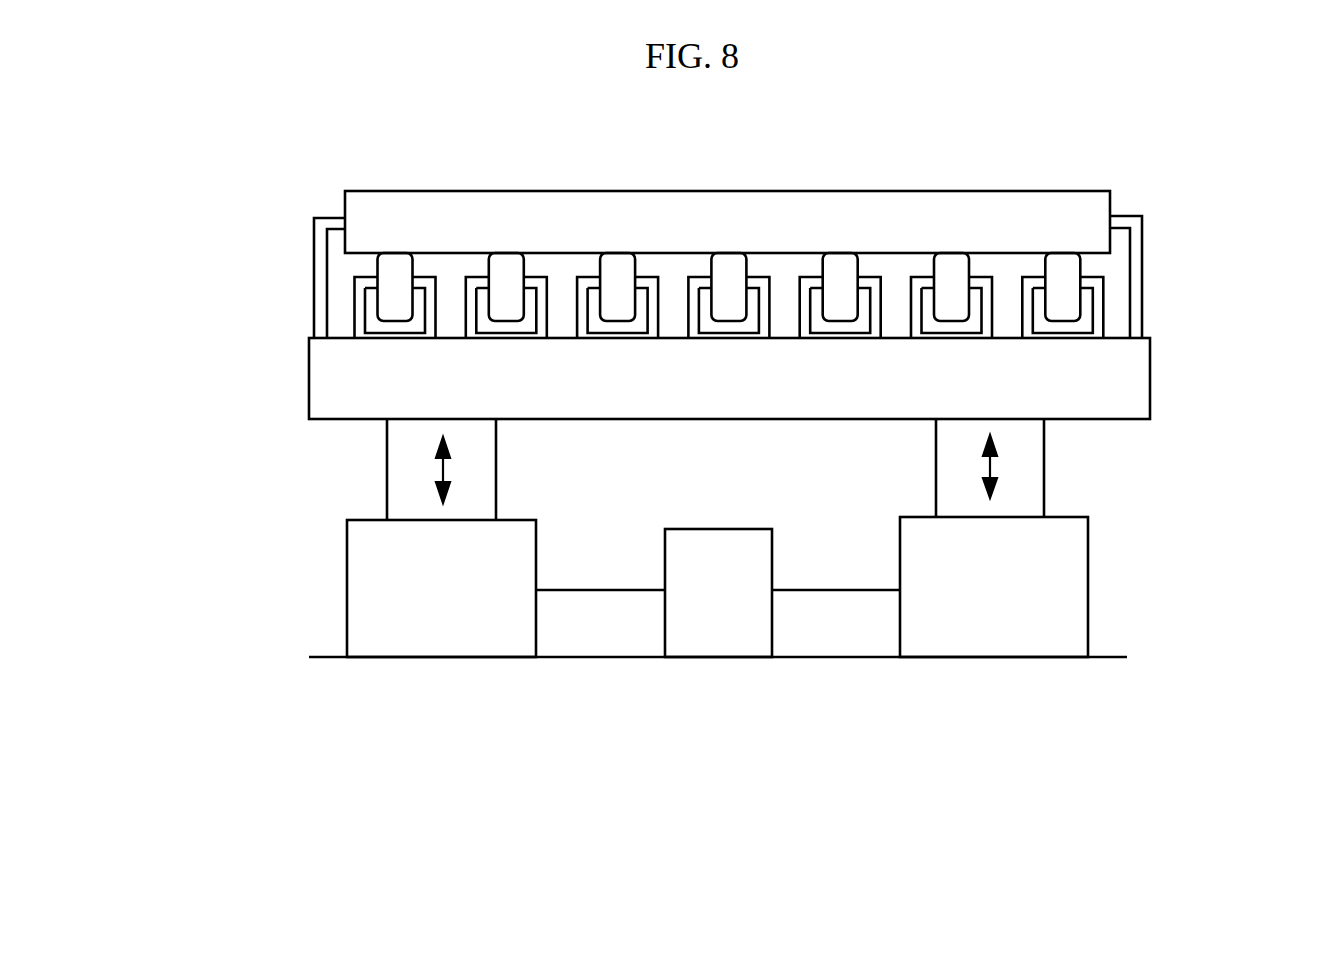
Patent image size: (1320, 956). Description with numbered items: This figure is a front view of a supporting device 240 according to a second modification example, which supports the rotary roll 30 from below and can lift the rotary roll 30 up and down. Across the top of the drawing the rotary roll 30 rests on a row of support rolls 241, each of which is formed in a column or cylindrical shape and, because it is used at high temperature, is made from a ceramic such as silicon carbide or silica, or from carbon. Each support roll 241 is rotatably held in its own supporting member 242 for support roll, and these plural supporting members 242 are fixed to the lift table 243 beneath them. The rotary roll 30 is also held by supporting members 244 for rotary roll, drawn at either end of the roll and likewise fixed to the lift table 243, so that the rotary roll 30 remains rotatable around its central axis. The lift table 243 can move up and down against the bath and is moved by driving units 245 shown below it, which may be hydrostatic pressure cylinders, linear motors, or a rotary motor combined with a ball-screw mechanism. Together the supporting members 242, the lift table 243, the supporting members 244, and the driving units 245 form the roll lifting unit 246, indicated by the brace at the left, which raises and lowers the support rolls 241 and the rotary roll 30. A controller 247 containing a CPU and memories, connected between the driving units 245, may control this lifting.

The rotary roll 30 is at (1078, 200).
The supporting device 240 is at (1172, 417).
The support roll 241 is at (1065, 263).
The supporting member for support roll 242 is at (356, 316).
The lift table 243 is at (322, 388).
The supporting member for rotary roll 244 is at (314, 257).
The driving unit 245 is at (367, 598).
The roll lifting unit 246 is at (208, 193).
The controller 247 is at (723, 540).